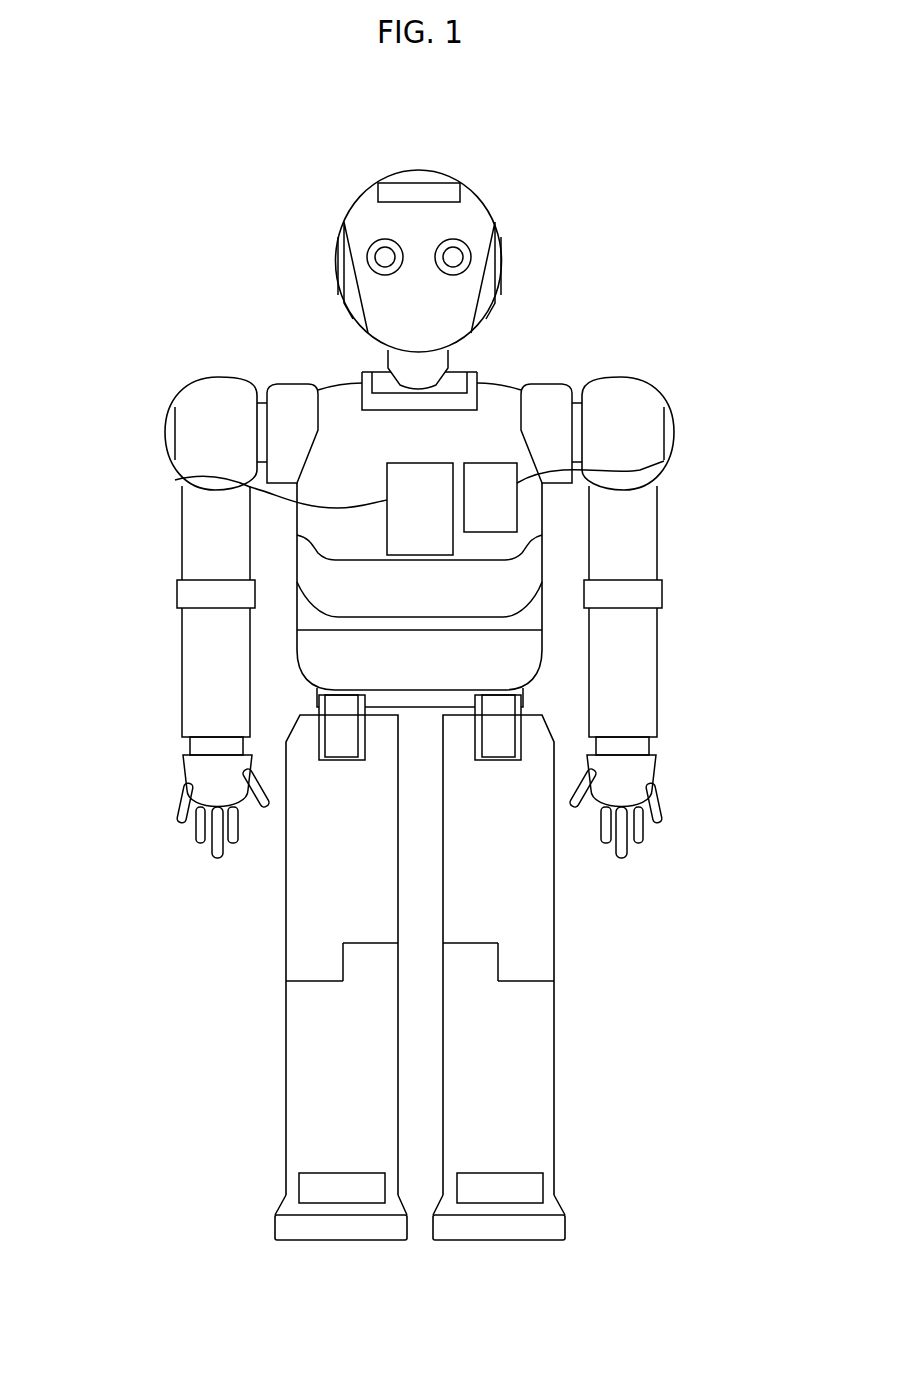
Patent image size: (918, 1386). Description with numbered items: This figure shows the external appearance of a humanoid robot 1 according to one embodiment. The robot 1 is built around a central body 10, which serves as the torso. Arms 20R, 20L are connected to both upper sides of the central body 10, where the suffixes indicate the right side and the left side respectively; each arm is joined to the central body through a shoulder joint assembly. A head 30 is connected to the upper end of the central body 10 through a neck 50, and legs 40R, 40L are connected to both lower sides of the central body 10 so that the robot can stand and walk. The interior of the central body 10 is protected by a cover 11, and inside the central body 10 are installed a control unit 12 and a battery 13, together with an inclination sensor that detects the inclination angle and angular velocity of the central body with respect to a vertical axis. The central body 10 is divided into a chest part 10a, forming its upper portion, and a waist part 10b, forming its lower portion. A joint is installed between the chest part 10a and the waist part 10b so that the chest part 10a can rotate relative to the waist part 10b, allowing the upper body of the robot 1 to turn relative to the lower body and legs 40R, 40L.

The humanoid robot 1 is at (647, 188).
The central body 10 is at (743, 558).
The chest part 10a is at (550, 560).
The waist part 10b is at (552, 648).
The cover 11 is at (545, 510).
The control unit 12 is at (180, 481).
The battery 13 is at (664, 461).
The right arm 20R is at (157, 583).
The left arm 20L is at (685, 673).
The head 30 is at (480, 184).
The right leg 40R is at (230, 935).
The left leg 40L is at (612, 935).
The neck 50 is at (462, 353).